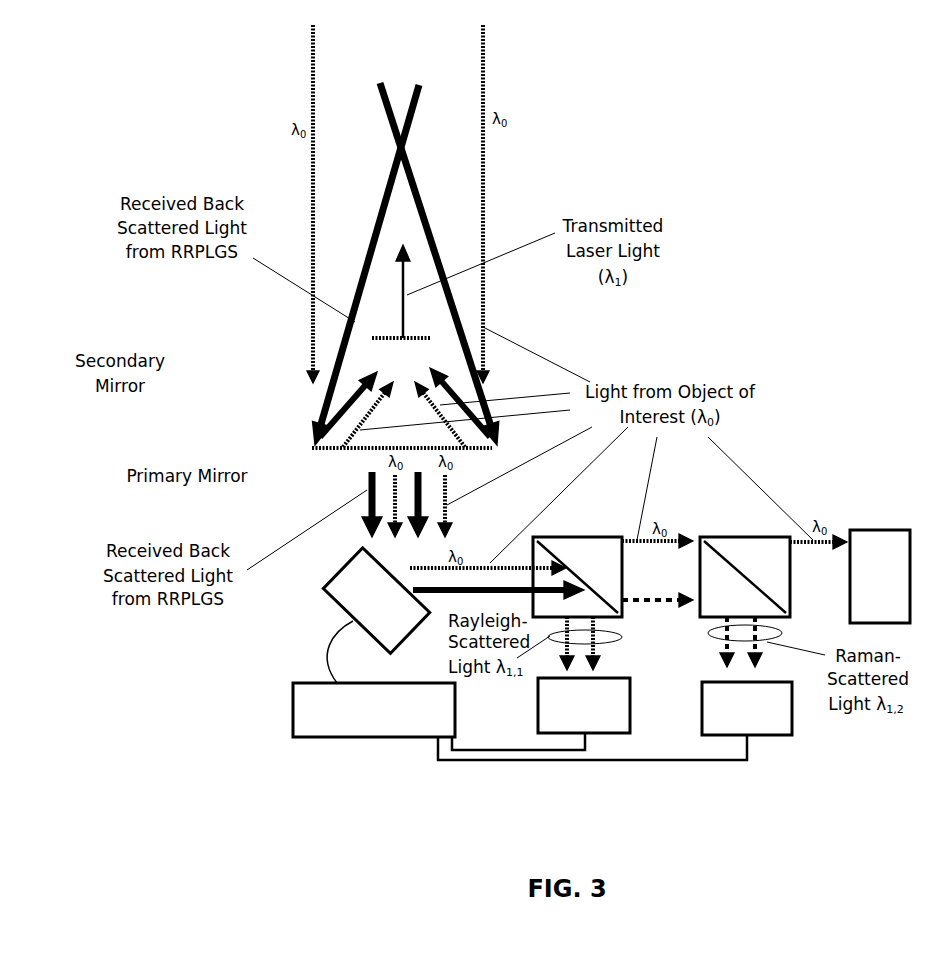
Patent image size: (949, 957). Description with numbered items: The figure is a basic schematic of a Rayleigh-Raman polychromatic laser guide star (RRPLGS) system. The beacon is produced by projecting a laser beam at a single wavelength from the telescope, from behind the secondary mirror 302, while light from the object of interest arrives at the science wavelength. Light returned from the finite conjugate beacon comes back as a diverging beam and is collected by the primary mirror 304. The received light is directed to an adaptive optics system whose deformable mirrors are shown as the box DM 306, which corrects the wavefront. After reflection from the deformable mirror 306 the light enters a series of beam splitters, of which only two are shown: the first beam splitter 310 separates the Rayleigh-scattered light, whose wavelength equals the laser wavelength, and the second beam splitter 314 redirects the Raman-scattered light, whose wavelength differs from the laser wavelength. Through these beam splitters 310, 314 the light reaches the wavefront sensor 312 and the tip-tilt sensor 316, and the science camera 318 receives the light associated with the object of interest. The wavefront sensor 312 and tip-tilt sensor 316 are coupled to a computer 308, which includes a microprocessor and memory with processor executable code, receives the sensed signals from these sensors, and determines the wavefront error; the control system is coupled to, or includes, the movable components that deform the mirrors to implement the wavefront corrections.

The secondary mirror 302 is at (372, 338).
The primary mirror 304 is at (312, 451).
The deformable mirror 306 is at (343, 590).
The computer 308 is at (312, 728).
The first beam splitter 310 is at (598, 560).
The wavefront sensor 312 is at (597, 720).
The second beam splitter 314 is at (762, 545).
The tip-tilt sensor 316 is at (770, 720).
The science camera 318 is at (888, 550).